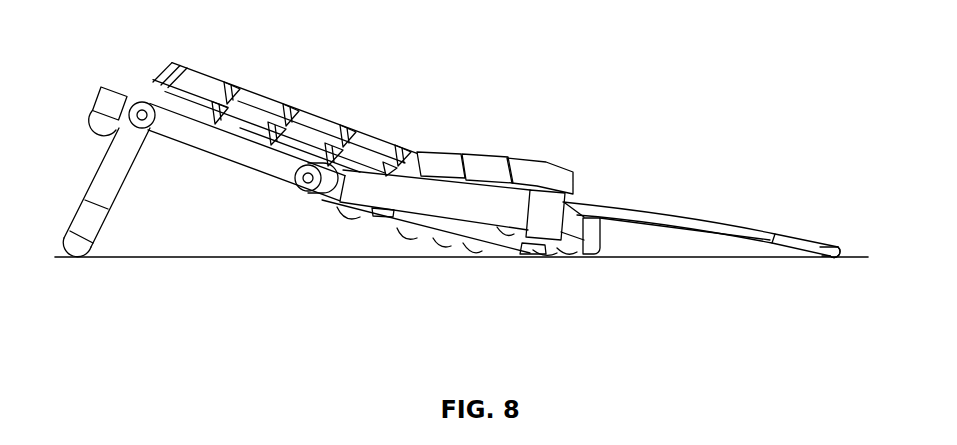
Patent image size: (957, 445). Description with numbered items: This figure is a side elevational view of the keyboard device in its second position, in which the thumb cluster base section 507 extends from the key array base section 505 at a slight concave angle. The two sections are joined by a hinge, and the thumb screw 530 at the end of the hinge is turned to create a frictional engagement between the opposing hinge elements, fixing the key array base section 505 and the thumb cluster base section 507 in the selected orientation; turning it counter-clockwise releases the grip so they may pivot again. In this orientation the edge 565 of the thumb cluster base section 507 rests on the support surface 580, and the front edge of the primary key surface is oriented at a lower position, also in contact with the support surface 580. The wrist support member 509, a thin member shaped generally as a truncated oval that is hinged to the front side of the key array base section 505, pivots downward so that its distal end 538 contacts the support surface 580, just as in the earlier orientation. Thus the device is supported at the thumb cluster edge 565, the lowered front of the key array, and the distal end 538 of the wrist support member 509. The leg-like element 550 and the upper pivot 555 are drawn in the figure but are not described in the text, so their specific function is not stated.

The key array base section 505 is at (222, 168).
The thumb cluster base section 507 is at (345, 238).
The wrist support member 509 is at (694, 217).
The thumb screw 530 is at (303, 187).
The distal end of wrist support member 538 is at (840, 259).
The support leg 550 is at (110, 170).
The upper pivot roller 555 is at (138, 102).
The edge of thumb cluster base member 565 is at (530, 258).
The support surface 580 is at (706, 259).